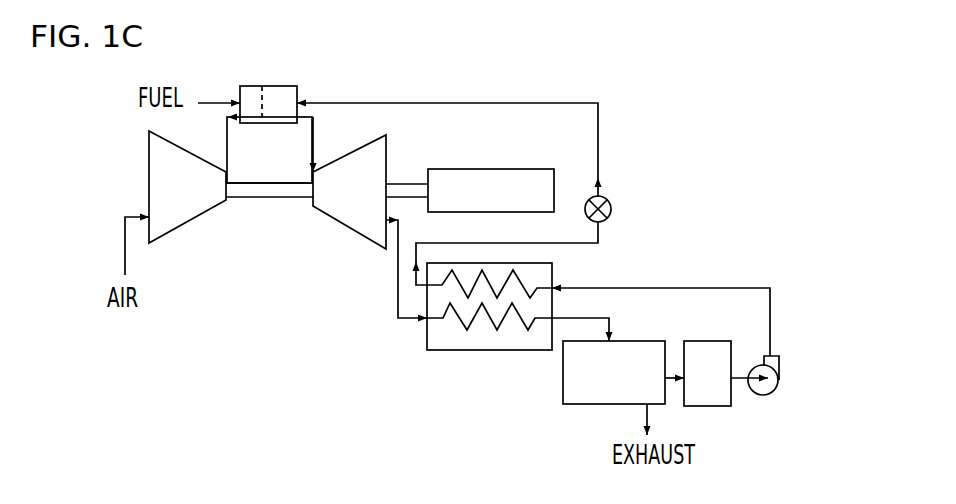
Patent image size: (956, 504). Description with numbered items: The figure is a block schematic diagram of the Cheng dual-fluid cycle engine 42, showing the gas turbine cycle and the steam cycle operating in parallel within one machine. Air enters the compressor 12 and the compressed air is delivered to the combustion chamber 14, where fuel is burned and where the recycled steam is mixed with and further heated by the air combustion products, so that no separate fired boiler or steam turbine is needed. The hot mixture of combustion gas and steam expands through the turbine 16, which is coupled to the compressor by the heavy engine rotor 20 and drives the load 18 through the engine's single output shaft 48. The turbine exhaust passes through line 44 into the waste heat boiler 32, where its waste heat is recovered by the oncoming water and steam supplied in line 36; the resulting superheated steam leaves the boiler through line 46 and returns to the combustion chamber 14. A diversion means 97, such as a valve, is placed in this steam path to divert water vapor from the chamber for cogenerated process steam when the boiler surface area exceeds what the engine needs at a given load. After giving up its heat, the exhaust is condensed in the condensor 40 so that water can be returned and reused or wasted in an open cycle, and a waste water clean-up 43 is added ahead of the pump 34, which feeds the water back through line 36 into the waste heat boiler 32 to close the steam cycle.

The compressor 12 is at (148, 160).
The combustion chamber 14 is at (268, 86).
The turbine 16 is at (338, 160).
The load 18 is at (488, 169).
The engine rotor 20 is at (283, 198).
The output shaft 48 is at (398, 184).
The waste heat boiler 32 is at (440, 351).
The pump 34 is at (768, 396).
The line 36 is at (642, 288).
The condensor 40 is at (564, 405).
The Cheng dual-fluid cycle engine 42 is at (98, 416).
The waste water clean-up 43 is at (725, 407).
The line 44 is at (398, 287).
The line 46 is at (600, 149).
The diversion means 97 is at (612, 209).